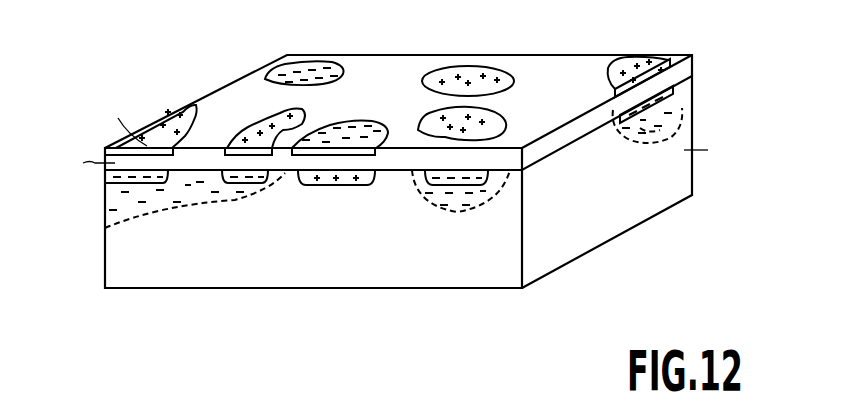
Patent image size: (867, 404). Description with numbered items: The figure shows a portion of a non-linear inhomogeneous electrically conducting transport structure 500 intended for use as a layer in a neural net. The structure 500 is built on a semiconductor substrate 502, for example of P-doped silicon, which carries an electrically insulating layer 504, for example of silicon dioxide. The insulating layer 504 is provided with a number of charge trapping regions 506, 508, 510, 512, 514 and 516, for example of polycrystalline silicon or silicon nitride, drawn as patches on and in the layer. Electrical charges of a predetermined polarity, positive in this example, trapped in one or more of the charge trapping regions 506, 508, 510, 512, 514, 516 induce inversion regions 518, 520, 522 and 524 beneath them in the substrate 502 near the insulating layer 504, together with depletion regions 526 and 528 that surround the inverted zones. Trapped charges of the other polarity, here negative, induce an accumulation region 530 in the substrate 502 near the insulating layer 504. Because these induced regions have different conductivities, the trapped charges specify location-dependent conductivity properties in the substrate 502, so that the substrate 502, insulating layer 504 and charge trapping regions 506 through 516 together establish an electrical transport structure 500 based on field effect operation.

The non-linear inhomogeneous electrically conducting transport structure 500 is at (728, 321).
The semiconductor substrate 502 is at (593, 233).
The electrically insulating layer 504 is at (687, 77).
The charge trapping region 506 is at (300, 66).
The charge trapping region 508 is at (187, 108).
The charge trapping region 510 is at (265, 122).
The charge trapping region 512 is at (373, 120).
The charge trapping region 514 is at (497, 120).
The charge trapping region 516 is at (642, 57).
The inversion region 518 is at (105, 193).
The inversion region 520 is at (257, 185).
The inversion region 522 is at (448, 185).
The inversion region 524 is at (675, 108).
The depletion region 526 is at (192, 190).
The depletion region 528 is at (655, 130).
The accumulation region 530 is at (333, 187).